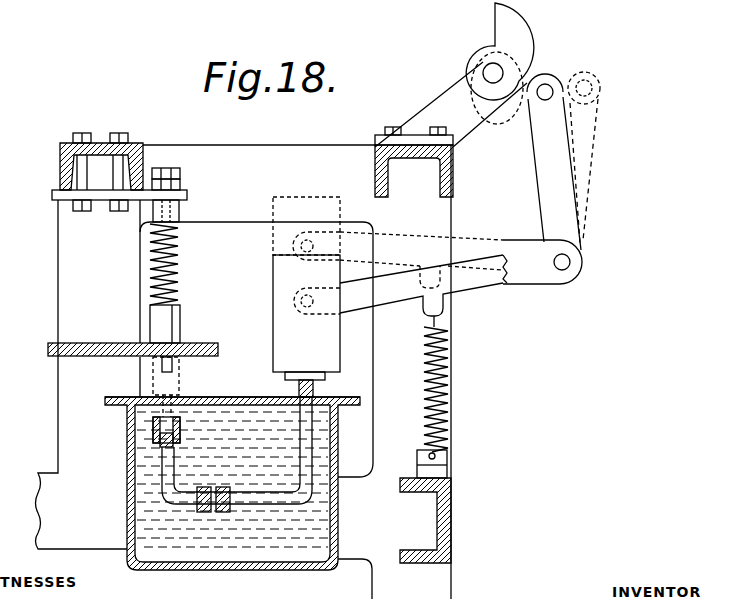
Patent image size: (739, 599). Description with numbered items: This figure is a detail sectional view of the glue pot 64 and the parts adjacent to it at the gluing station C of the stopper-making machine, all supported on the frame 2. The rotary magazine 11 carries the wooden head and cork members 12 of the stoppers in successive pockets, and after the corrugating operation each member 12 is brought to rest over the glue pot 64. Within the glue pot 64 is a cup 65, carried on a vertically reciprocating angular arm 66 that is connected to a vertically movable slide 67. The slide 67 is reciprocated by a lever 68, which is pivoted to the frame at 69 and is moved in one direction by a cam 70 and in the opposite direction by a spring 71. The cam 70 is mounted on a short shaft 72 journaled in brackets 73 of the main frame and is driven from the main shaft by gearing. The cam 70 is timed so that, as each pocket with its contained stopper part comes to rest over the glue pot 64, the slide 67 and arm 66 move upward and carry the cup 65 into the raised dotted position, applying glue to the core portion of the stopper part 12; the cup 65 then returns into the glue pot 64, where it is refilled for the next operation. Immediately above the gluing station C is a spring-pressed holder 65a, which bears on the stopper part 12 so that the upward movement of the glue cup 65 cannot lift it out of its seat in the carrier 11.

The frame 2 is at (45, 306).
The gluing station C is at (117, 330).
The rotary magazine 11 is at (212, 349).
The head and cork member 12 is at (172, 362).
The glue pot 64 is at (228, 562).
The cup 65 is at (153, 376).
The spring-pressed holder 65a is at (173, 320).
The angular arm 66 is at (307, 493).
The slide 67 is at (306, 297).
The lever 68 is at (476, 287).
The pivot 69 is at (570, 263).
The cam 70 is at (528, 43).
The spring 71 is at (446, 390).
The short shaft 72 is at (493, 72).
The brackets 73 is at (487, 156).